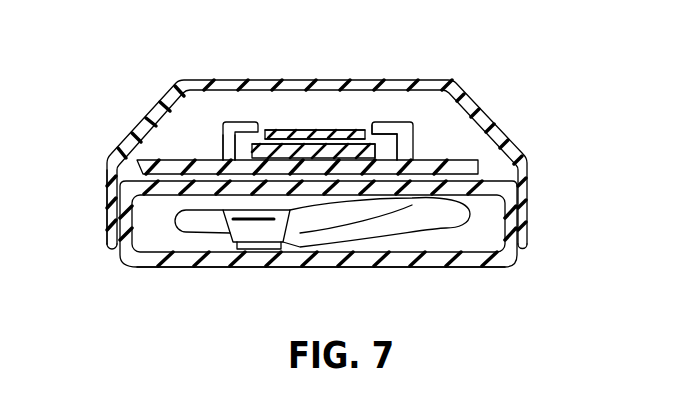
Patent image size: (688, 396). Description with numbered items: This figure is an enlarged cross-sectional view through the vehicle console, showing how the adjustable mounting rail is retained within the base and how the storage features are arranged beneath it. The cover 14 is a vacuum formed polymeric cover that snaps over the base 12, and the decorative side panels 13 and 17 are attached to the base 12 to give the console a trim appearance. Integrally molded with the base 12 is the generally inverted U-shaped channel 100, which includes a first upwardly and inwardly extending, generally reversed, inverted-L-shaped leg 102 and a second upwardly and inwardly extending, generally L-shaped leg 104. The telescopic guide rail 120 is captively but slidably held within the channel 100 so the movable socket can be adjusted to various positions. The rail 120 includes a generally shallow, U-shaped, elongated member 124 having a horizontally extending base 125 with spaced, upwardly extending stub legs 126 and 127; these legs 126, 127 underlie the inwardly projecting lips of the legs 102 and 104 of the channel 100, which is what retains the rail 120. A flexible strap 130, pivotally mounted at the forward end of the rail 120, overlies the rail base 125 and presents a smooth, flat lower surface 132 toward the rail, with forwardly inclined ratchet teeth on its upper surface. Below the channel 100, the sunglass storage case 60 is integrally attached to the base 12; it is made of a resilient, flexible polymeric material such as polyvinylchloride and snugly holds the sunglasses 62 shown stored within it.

The channel 100 is at (307, 110).
The cover 14 is at (411, 80).
The first leg 102 is at (256, 122).
The telescopic guide rail 120 is at (277, 125).
The flexible strap 130 is at (300, 126).
The U-shaped elongated member 124 is at (362, 130).
The base of rail 125 is at (306, 146).
The lower surface of strap 132 is at (374, 127).
The second leg 104 is at (404, 121).
The stub leg 127 is at (413, 142).
The base 12 is at (482, 159).
The stub leg 126 is at (255, 133).
The decorative side panel 17 is at (107, 218).
The decorative side panel 13 is at (528, 228).
The sunglasses 62 is at (177, 230).
The sunglass storage case 60 is at (389, 269).